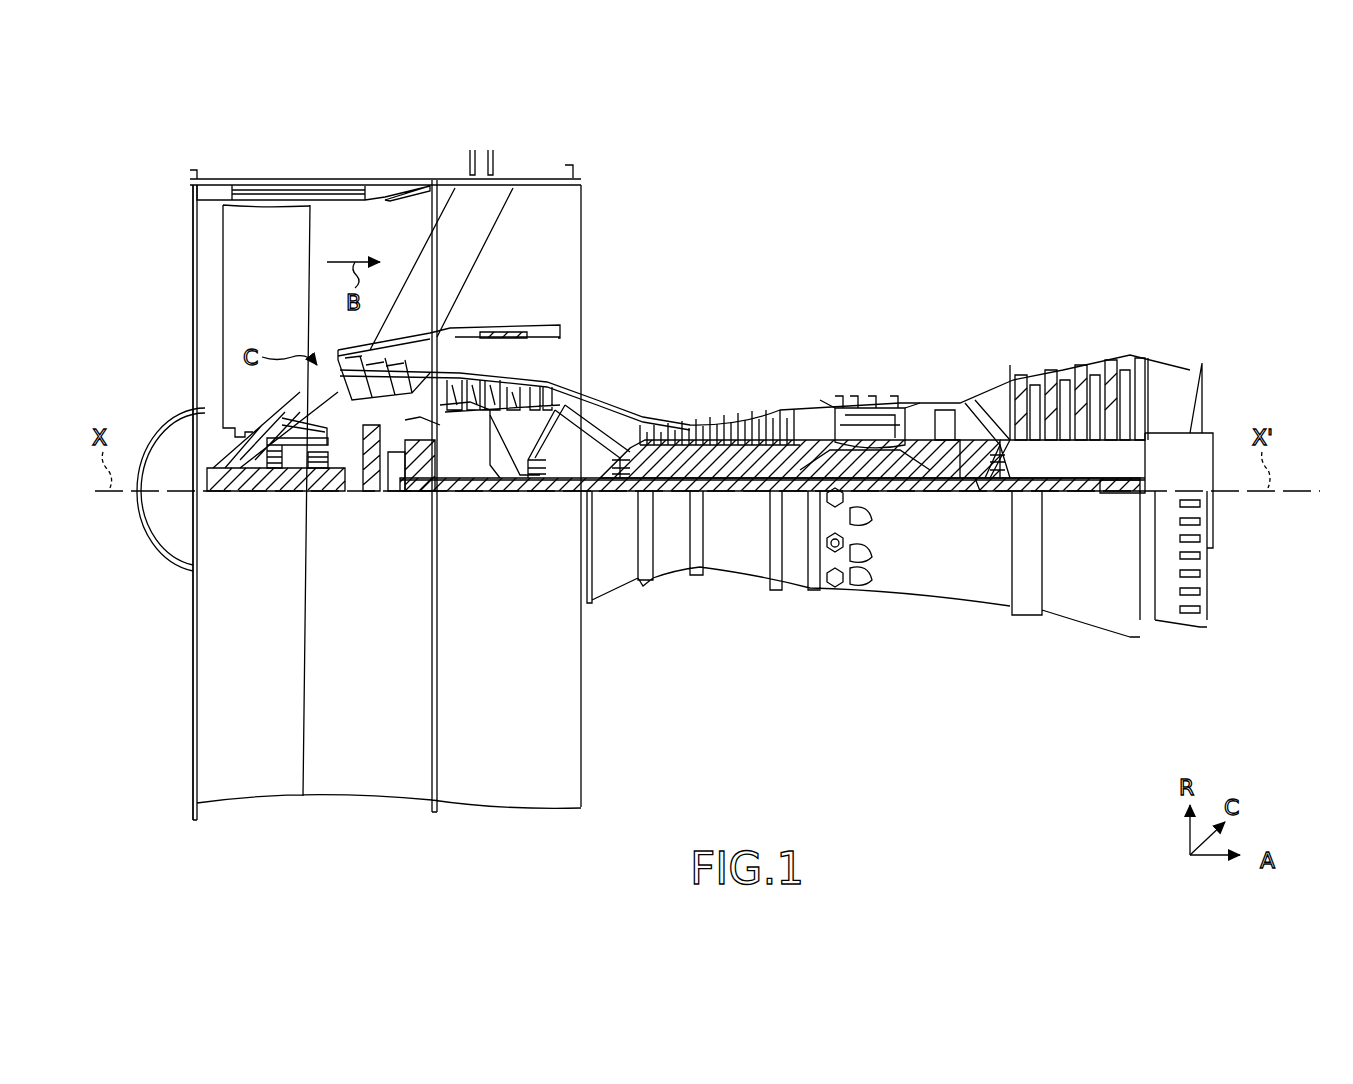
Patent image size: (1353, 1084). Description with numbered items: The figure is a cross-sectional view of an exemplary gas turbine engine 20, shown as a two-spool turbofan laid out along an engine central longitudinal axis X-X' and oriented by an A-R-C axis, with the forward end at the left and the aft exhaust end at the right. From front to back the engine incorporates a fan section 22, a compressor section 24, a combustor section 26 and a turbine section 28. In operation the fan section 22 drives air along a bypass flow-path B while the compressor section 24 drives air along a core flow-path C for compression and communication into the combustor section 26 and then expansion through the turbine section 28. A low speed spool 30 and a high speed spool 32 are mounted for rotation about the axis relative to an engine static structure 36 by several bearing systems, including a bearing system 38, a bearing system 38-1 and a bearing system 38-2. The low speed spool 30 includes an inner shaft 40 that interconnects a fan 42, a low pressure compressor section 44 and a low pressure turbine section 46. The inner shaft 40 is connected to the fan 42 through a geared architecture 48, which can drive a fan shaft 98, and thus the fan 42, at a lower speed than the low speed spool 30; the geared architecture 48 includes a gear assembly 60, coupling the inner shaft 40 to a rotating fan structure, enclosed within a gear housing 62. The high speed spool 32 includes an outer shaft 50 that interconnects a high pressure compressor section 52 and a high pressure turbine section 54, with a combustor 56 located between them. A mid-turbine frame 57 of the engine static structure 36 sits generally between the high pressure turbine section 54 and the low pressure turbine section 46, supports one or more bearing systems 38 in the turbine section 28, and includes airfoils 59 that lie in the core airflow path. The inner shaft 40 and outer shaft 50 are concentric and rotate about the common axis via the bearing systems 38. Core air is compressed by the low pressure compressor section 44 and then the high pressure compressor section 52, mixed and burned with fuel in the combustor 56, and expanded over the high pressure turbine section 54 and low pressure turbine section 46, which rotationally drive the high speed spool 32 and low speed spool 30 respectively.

The gas turbine engine 20 is at (930, 215).
The fan section 22 is at (430, 158).
The compressor section 24 is at (440, 294).
The combustor section 26 is at (925, 294).
The turbine section 28 is at (1145, 294).
The low speed spool 30 is at (755, 520).
The high speed spool 32 is at (789, 454).
The engine static structure 36 is at (183, 803).
The bearing system 38 is at (990, 480).
The bearing system 38-1 is at (270, 472).
The bearing system 38-2 is at (534, 476).
The inner shaft 40 is at (603, 491).
The fan 42 is at (266, 321).
The low pressure compressor section 44 is at (514, 390).
The low pressure turbine section 46 is at (1078, 378).
The geared architecture 48 is at (400, 511).
The outer shaft 50 is at (875, 470).
The high pressure compressor section 52 is at (745, 422).
The high pressure turbine section 54 is at (945, 410).
The combustor 56 is at (878, 430).
The mid-turbine frame 57 is at (990, 415).
The airfoils 59 is at (1005, 425).
The gear assembly 60 is at (420, 470).
The gear housing 62 is at (405, 432).
The fan shaft 98 is at (228, 495).